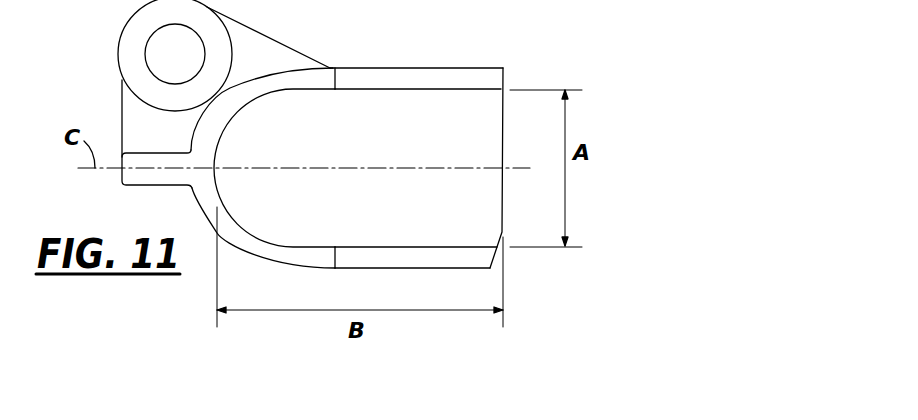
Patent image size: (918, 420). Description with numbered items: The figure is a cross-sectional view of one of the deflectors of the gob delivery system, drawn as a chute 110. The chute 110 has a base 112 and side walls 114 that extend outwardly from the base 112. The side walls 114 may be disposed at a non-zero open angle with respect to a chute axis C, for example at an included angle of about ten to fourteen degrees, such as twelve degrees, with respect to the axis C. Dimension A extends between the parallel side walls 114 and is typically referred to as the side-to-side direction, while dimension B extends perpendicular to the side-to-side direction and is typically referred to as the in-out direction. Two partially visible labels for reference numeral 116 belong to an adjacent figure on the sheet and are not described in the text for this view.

The chute 110 is at (471, 92).
The base 112 is at (209, 175).
The side wall 114 is at (309, 87).
The element of adjacent figure 116 is at (557, 416).